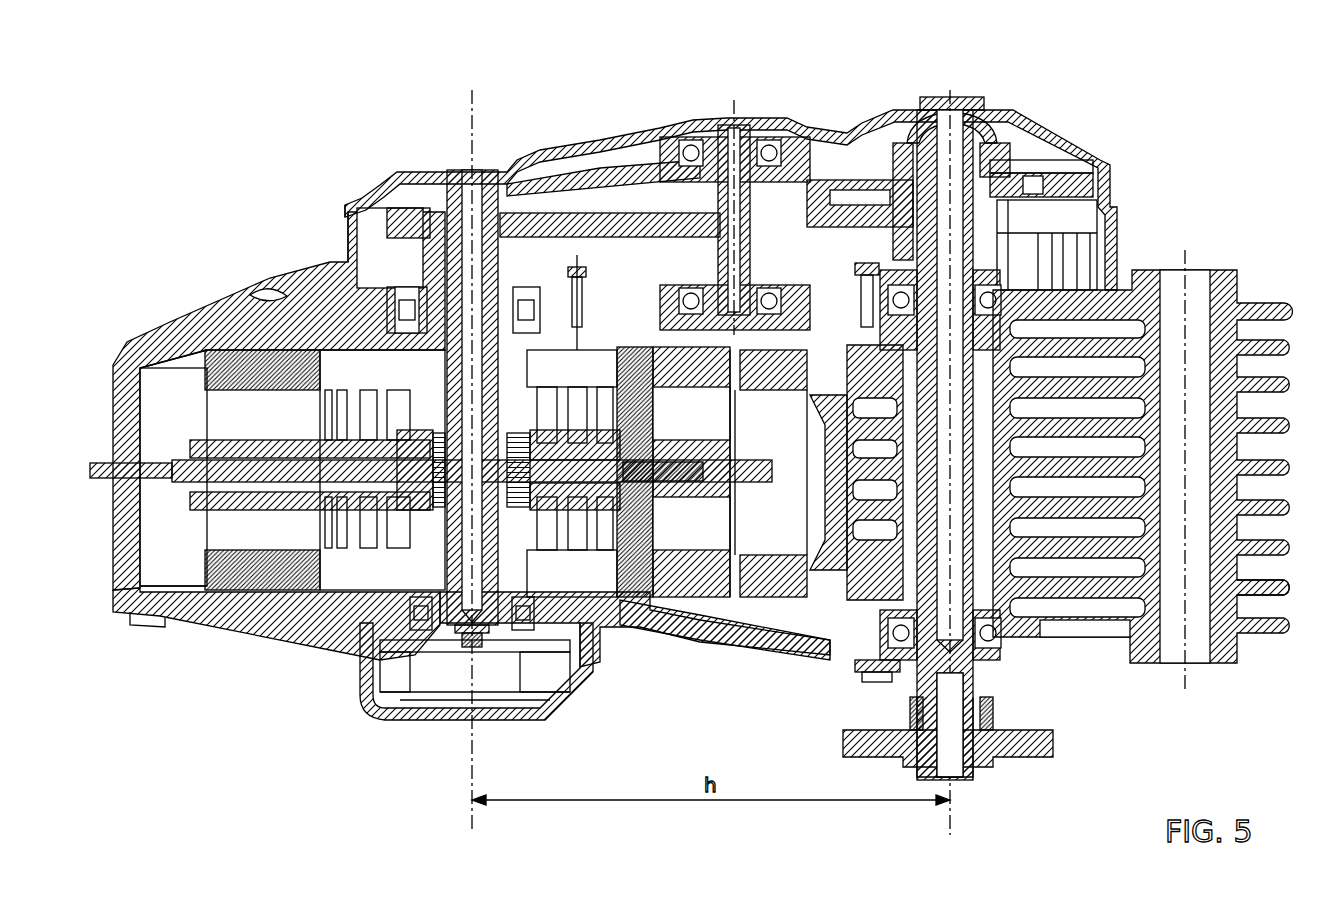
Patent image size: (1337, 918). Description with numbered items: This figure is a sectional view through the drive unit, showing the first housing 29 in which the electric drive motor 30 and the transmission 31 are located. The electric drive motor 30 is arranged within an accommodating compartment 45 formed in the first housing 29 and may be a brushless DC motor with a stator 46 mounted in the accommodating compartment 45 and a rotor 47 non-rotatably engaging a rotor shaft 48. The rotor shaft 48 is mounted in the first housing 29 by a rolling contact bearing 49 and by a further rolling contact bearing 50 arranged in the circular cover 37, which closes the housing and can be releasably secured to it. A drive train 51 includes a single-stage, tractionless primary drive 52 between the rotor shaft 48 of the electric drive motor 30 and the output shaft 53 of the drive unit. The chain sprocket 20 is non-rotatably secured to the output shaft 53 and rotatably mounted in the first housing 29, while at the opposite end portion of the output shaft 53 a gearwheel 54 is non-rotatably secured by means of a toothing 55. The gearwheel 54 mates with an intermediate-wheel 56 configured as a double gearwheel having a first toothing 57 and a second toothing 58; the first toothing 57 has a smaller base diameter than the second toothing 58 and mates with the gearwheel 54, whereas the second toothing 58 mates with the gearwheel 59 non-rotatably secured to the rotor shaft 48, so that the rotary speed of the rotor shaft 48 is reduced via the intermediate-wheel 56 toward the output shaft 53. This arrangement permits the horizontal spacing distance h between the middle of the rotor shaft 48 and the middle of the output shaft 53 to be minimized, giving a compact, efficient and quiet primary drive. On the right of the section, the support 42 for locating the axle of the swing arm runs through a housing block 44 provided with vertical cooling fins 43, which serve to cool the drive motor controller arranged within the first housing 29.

The chain sprocket 20 is at (1033, 745).
The first housing 29 is at (216, 316).
The electric drive motor 30 is at (105, 574).
The transmission 31 is at (781, 103).
The circular cover 37 is at (209, 628).
The support 42 is at (1196, 282).
The vertical cooling fins 43 is at (1288, 588).
The housing block 44 is at (1142, 680).
The accommodating compartment 45 is at (150, 401).
The stator 46 is at (712, 590).
The rotor 47 is at (170, 468).
The rotor shaft 48 is at (452, 176).
The rolling contact bearing 49 is at (402, 300).
The further rolling contact bearing 50 is at (512, 640).
The drive train 51 is at (598, 88).
The primary drive 52 is at (729, 100).
The output shaft 53 is at (920, 680).
The gearwheel 54 is at (1090, 172).
The toothing 55 is at (1090, 194).
The intermediate-wheel 56 is at (712, 128).
The first toothing 57 is at (632, 178).
The second toothing 58 is at (880, 145).
The gearwheel 59 is at (366, 196).